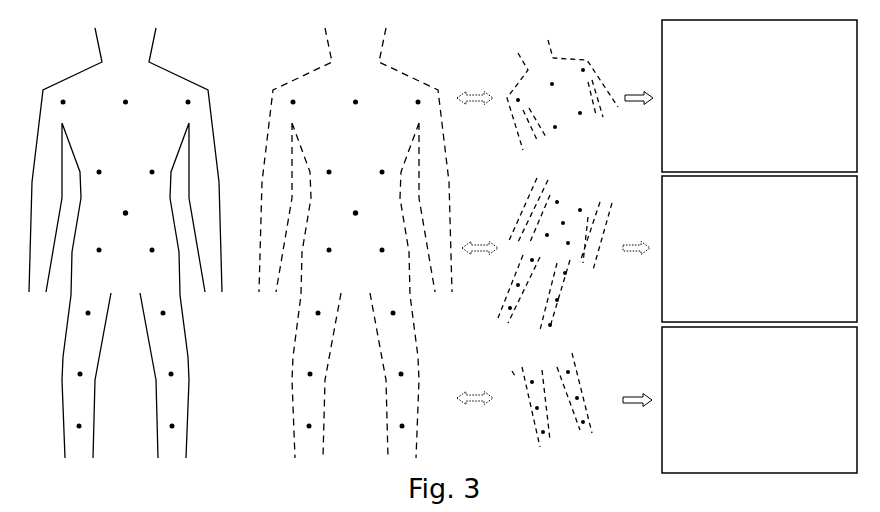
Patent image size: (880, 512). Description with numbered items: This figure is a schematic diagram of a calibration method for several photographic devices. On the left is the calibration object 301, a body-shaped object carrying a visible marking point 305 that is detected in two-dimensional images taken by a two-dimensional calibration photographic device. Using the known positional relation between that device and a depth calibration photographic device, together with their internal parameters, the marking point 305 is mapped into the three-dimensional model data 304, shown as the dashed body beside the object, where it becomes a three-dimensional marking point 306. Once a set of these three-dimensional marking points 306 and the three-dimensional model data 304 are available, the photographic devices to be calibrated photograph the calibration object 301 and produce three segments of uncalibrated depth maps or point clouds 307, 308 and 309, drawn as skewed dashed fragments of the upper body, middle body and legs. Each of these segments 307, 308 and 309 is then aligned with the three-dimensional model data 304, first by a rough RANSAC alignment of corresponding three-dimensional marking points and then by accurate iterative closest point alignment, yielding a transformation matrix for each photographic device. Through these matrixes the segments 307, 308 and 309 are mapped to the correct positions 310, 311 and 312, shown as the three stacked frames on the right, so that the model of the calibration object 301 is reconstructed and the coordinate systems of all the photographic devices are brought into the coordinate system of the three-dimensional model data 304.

The calibration object 301 is at (129, 243).
The three-dimensional model data 304 is at (361, 243).
The marking point 305 is at (122, 221).
The three-dimensional marking point 306 is at (353, 222).
The uncalibrated depth map or point cloud segment 307 is at (562, 94).
The uncalibrated depth map or point cloud segment 308 is at (555, 254).
The uncalibrated depth map or point cloud segment 309 is at (552, 406).
The correct position 310 is at (759, 239).
The correct position 311 is at (759, 274).
The correct position 312 is at (759, 383).